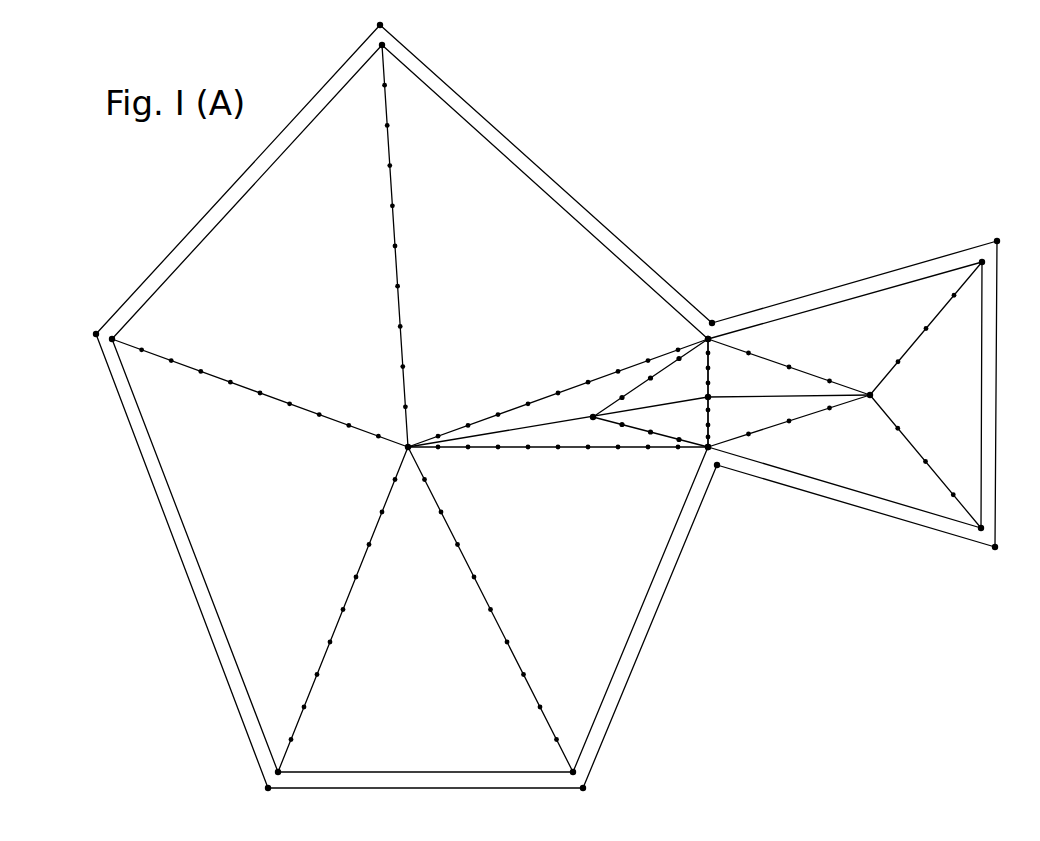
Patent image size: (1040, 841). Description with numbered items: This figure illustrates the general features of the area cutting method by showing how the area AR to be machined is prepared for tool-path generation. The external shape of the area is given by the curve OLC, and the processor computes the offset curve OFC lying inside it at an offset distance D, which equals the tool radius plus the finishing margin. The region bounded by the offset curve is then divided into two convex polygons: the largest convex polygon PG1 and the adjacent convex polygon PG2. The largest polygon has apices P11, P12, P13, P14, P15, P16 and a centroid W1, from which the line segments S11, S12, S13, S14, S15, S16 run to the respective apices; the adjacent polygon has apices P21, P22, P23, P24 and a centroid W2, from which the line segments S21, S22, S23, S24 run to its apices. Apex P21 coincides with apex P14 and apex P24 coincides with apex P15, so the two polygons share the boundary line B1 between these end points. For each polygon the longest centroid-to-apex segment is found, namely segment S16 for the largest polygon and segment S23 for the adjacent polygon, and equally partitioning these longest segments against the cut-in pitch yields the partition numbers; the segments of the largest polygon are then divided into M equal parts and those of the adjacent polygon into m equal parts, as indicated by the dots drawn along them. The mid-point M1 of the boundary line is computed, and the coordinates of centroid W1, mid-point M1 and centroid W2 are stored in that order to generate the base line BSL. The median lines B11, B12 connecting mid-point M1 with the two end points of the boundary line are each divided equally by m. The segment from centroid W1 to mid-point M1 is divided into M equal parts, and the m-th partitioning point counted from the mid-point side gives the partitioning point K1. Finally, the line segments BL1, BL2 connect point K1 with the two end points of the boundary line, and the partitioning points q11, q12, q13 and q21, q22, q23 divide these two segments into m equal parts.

The curve of the external shape OLC is at (553, 160).
The offset curve OFC is at (560, 204).
The offset distance D is at (468, 156).
The area AR is at (590, 244).
The largest convex polygon PG1 is at (630, 618).
The adjacent convex polygon PG2 is at (927, 498).
The apex of the largest convex polygon P11 is at (91, 337).
The apex of the largest convex polygon P12 is at (253, 781).
The apex of the largest convex polygon P13 is at (598, 781).
The apex of the largest convex polygon P14 is at (724, 470).
The apex of the largest convex polygon P15 is at (719, 307).
The apex of the largest convex polygon P16 is at (404, 35).
The apex of the adjacent convex polygon P21 is at (724, 480).
The apex of the adjacent convex polygon P22 is at (1003, 545).
The apex of the adjacent convex polygon P23 is at (1006, 246).
The apex of the adjacent convex polygon P24 is at (718, 317).
The centroid of the largest convex polygon W1 is at (421, 430).
The centroid of the adjacent convex polygon W2 is at (887, 397).
The partitioning point K1 is at (591, 407).
The mid-point of the boundary line M1 is at (721, 390).
The line segment connecting centroid and apex S11 is at (218, 380).
The line segment connecting centroid and apex S12 is at (327, 650).
The line segment connecting centroid and apex S13 is at (518, 660).
The line segment connecting centroid and apex S14 is at (630, 450).
The line segment connecting centroid and apex S15 is at (605, 376).
The longest line segment of the largest convex polygon S16 is at (389, 143).
The line segment connecting centroid and apex S21 is at (822, 411).
The line segment connecting centroid and apex S22 is at (912, 441).
The longest line segment of the adjacent convex polygon S23 is at (913, 344).
The line segment connecting centroid and apex S24 is at (812, 372).
The line segment connecting partitioning point and boundary end point BL1 is at (667, 366).
The line segment connecting partitioning point and boundary end point BL2 is at (660, 437).
The base line BSL is at (803, 398).
The boundary line B1 is at (719, 413).
The median line B11 is at (712, 373).
The median line B12 is at (712, 404).
The partitioning point q11 is at (636, 399).
The partitioning point q12 is at (664, 384).
The partitioning point q13 is at (691, 368).
The partitioning point q21 is at (611, 432).
The partitioning point q22 is at (658, 423).
The partitioning point q23 is at (686, 427).